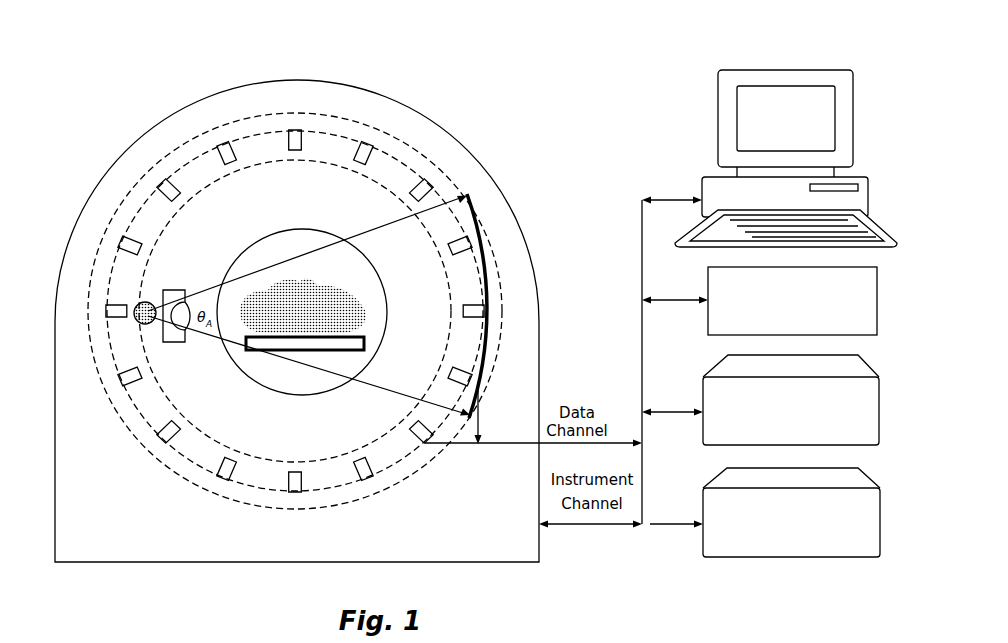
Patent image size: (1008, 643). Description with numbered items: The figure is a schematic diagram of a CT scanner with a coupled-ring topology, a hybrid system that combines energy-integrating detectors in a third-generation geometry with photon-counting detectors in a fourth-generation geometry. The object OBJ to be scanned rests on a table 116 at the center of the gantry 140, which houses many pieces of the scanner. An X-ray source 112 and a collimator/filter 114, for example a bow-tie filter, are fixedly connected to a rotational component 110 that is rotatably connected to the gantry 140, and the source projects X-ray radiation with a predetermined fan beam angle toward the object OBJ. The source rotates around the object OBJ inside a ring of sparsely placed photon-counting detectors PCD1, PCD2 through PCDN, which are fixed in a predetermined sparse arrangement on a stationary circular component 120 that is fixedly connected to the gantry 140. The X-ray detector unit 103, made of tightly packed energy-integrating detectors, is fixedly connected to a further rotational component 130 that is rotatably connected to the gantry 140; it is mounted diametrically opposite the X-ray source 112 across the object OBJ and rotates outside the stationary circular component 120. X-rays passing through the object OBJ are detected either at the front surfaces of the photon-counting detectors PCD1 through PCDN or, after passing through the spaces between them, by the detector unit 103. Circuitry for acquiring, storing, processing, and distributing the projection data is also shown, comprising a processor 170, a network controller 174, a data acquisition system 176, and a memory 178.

The X-ray detector unit 103 is at (477, 227).
The rotational component 110 is at (198, 433).
The X-ray source 112 is at (133, 322).
The collimator/filter 114 is at (165, 292).
The table 116 is at (290, 352).
The circular component 120 is at (240, 483).
The rotational component 130 is at (338, 503).
The gantry 140 is at (465, 146).
The processor 170 is at (786, 158).
The network controller 174 is at (792, 301).
The data acquisition system 176 is at (791, 512).
The memory 178 is at (791, 400).
The photon-counting detector PCD1 is at (296, 130).
The photon-counting detector PCD2 is at (367, 146).
The photon-counting detector PCDN is at (230, 143).
The object OBJ is at (270, 290).